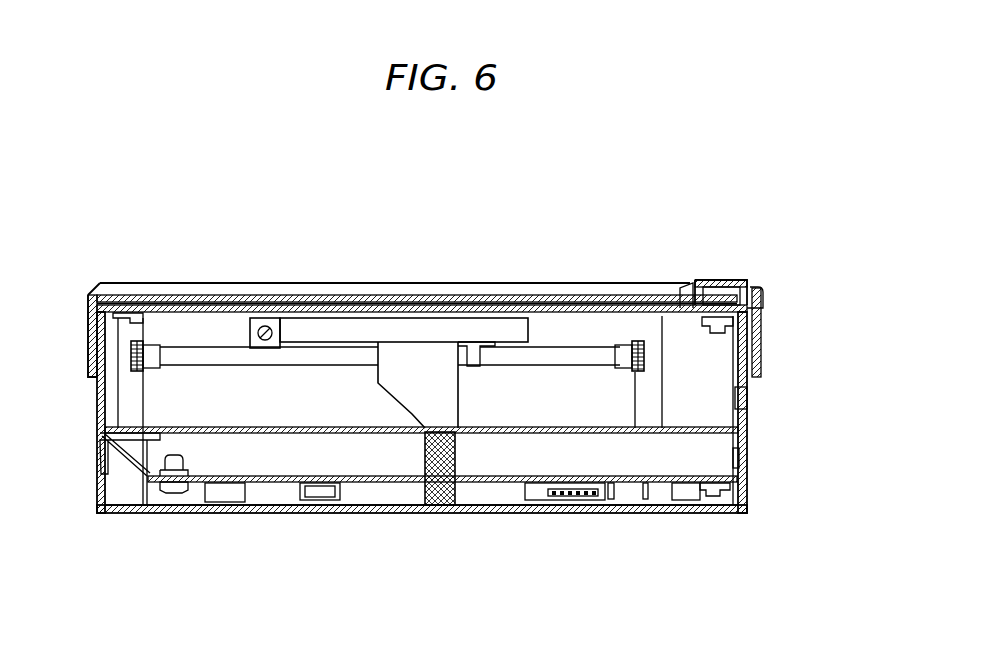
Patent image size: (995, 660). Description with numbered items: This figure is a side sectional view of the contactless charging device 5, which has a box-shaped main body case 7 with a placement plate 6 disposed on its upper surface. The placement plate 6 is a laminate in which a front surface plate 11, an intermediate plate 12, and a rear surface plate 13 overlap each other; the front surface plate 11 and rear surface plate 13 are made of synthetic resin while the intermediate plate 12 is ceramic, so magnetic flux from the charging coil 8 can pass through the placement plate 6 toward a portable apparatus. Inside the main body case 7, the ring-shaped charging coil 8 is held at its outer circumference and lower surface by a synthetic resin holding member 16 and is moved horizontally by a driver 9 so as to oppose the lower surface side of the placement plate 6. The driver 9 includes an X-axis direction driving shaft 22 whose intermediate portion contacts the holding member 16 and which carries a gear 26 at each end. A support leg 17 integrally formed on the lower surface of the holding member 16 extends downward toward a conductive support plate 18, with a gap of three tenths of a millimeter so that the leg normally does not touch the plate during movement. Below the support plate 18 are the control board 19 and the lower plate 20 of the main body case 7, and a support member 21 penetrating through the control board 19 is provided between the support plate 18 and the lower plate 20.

The contactless charging device 5 is at (428, 248).
The placement plate 6 is at (453, 302).
The main body case 7 is at (217, 513).
The charging coil 8 is at (318, 333).
The driver 9 is at (185, 352).
The front surface plate 11 is at (510, 302).
The intermediate plate 12 is at (550, 300).
The rear surface plate 13 is at (647, 292).
The holding member 16 is at (378, 330).
The support leg 17 is at (420, 388).
The support plate 18 is at (507, 430).
The control board 19 is at (660, 477).
The lower plate 20 is at (588, 510).
The support member 21 is at (440, 500).
The X-axis direction driving shaft 22 is at (225, 357).
The gear 26 is at (130, 350).